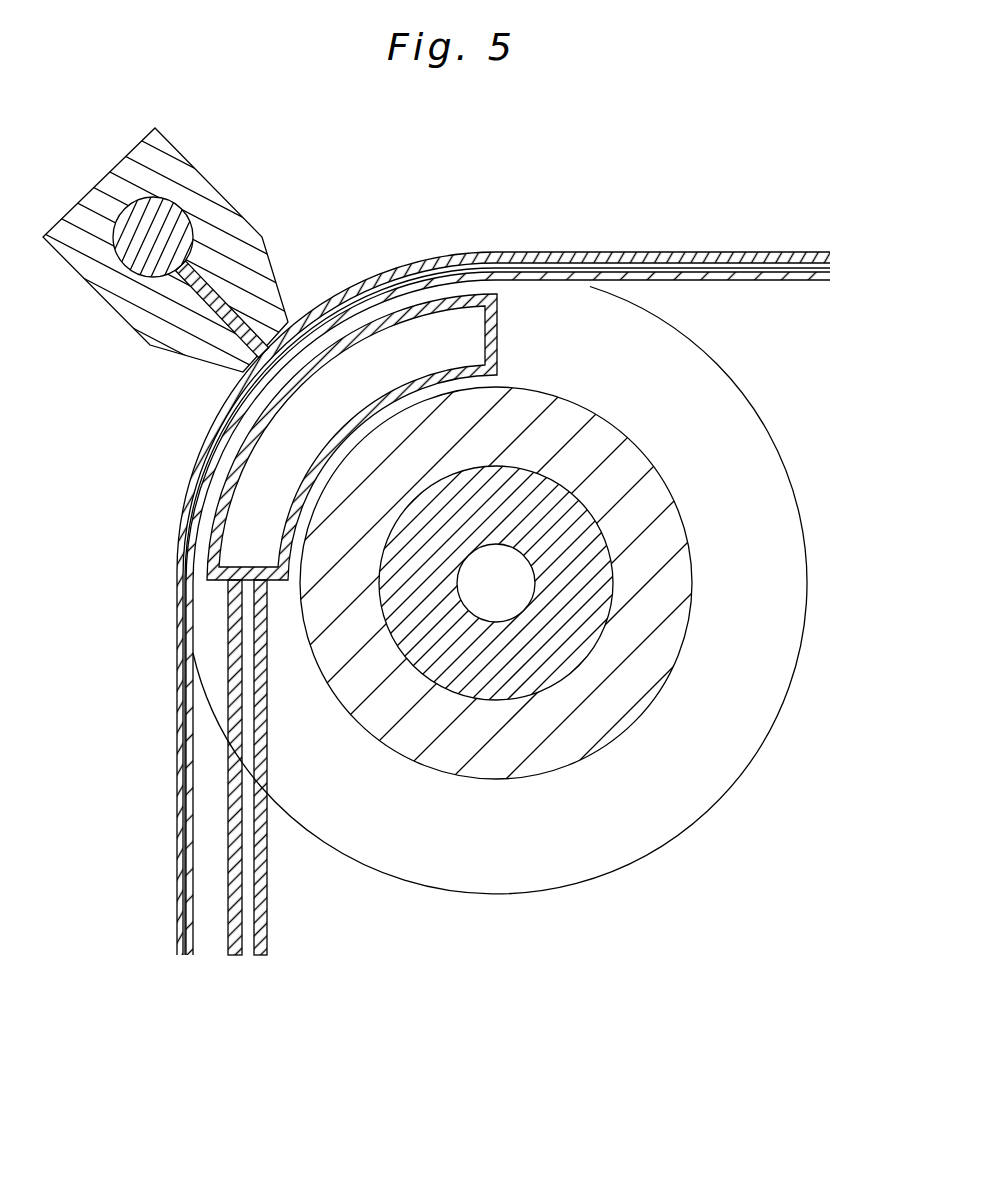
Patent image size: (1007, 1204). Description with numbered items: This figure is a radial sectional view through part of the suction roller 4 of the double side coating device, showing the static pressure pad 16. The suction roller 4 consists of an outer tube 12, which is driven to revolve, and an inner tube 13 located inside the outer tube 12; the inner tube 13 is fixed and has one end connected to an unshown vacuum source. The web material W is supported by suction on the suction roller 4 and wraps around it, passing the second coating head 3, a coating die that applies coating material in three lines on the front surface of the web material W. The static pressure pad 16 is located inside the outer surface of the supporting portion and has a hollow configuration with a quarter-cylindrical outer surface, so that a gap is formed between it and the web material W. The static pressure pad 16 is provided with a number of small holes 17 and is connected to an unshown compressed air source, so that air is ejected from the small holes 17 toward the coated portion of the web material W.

The second coating head 3 is at (203, 184).
The suction roller 4 is at (500, 660).
The outer tube 12 is at (567, 895).
The inner tube 13 is at (557, 691).
The static pressure pad 16 is at (507, 346).
The small holes 17 is at (332, 348).
The web material W is at (177, 716).